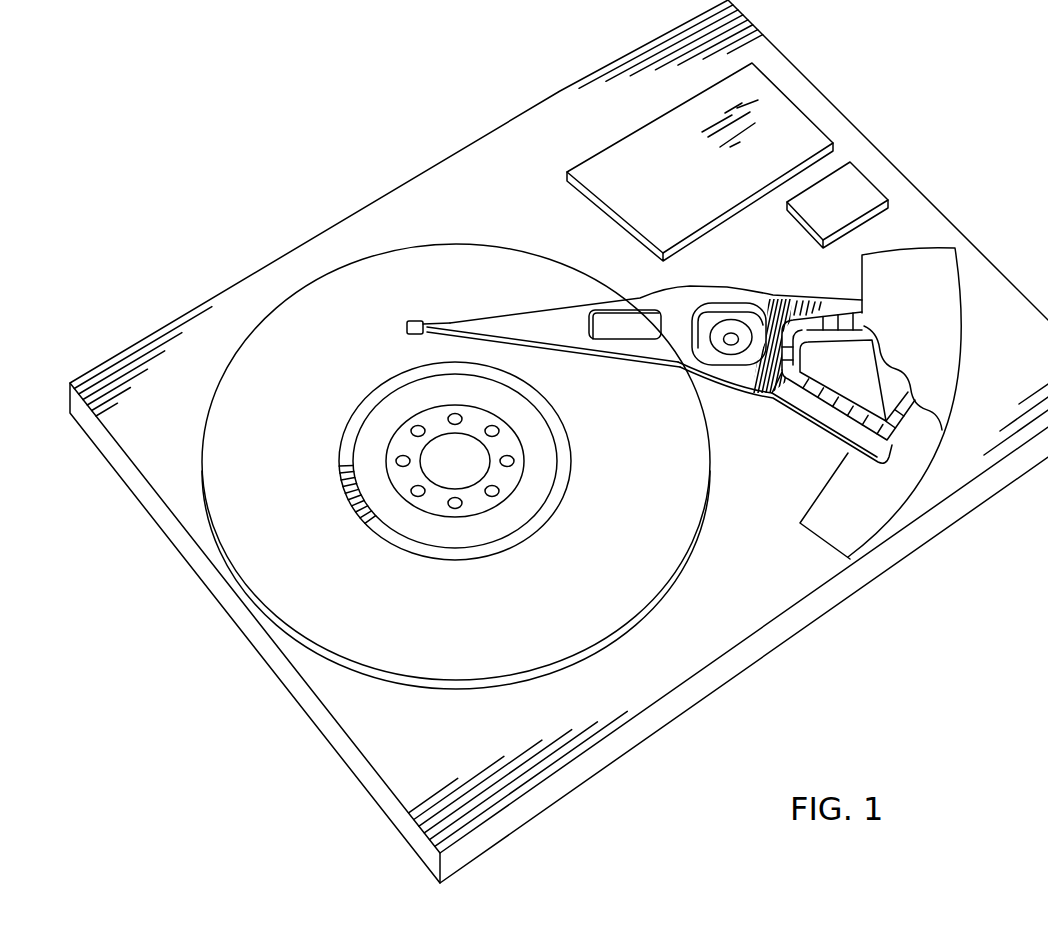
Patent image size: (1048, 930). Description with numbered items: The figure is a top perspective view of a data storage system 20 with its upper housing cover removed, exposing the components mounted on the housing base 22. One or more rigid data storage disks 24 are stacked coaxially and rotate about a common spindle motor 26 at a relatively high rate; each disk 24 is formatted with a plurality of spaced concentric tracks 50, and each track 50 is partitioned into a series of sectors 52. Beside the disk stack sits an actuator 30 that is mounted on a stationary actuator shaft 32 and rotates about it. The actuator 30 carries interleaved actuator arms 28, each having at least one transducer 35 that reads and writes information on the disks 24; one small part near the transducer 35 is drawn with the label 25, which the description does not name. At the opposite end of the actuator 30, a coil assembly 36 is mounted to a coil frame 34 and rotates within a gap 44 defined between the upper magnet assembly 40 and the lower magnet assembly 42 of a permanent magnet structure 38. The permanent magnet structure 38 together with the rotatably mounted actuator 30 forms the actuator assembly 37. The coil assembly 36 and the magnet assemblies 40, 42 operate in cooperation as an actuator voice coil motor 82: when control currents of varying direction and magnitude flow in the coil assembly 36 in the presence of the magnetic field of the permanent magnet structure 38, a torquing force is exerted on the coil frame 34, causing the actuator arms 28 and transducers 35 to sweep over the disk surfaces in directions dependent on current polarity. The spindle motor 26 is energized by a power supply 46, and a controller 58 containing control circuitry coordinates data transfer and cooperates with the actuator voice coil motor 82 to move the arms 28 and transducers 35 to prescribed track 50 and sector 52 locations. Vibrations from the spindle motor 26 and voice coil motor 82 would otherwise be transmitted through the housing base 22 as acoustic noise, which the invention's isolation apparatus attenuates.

The data storage system 20 is at (559, 441).
The housing base 22 is at (763, 640).
The data storage disk 24 is at (266, 451).
The gimbal 25 is at (428, 334).
The spindle motor 26 is at (472, 482).
The actuator arm 28 is at (560, 330).
The actuator 30 is at (751, 385).
The actuator shaft 32 is at (731, 333).
The coil frame 34 is at (788, 300).
The transducer 35 is at (410, 322).
The coil assembly 36 is at (807, 342).
The actuator assembly 37 is at (732, 393).
The permanent magnet structure 38 is at (901, 399).
The upper magnet assembly 40 is at (948, 330).
The lower magnet assembly 42 is at (820, 527).
The gap 44 is at (928, 420).
The power supply 46 is at (668, 199).
The track 50 is at (355, 413).
The sector 52 is at (343, 493).
The controller 58 is at (853, 209).
The actuator voice coil motor 82 is at (846, 451).